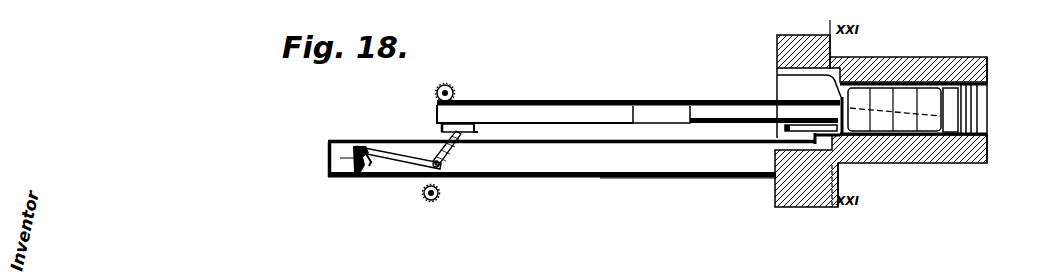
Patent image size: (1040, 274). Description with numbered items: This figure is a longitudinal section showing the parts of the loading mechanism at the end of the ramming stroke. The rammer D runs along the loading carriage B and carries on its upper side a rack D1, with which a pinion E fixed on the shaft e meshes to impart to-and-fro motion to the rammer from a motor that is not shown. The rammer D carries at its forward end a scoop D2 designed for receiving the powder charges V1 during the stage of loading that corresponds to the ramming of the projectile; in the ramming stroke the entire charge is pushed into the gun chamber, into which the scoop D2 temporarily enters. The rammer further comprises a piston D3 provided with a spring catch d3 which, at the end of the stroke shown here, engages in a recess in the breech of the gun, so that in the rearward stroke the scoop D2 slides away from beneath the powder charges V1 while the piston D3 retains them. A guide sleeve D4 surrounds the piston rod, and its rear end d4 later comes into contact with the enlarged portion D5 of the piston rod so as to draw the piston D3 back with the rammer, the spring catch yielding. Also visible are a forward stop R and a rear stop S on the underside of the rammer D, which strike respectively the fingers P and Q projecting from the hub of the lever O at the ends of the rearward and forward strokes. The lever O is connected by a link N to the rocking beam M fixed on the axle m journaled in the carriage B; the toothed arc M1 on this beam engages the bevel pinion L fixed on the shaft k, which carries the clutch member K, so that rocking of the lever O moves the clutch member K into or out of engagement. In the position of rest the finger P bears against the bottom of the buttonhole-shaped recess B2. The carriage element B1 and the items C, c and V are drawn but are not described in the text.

The rammer D is at (543, 112).
The rack D1 is at (500, 103).
The enlarged portion of the piston rod D5 is at (651, 114).
The rear end of the guide sleeve d4 is at (700, 108).
The forward stop R is at (782, 114).
The buttonhole-shaped recess B2 is at (433, 143).
The loading carriage B is at (544, 162).
The frame rack B1 is at (651, 176).
The link N is at (392, 156).
The rocking beam M is at (355, 162).
The axle m is at (356, 160).
The bevel pinion L is at (358, 164).
The shaft k is at (358, 175).
The clutch member K is at (361, 180).
The toothed arc M1 is at (372, 160).
The finger Q is at (458, 142).
The finger P is at (444, 138).
The rear stop S is at (483, 135).
The pinion E is at (447, 85).
The shaft e is at (454, 93).
The roller C is at (437, 201).
The roller pin c is at (426, 198).
The lever O is at (441, 170).
The guide sleeve D4 is at (818, 128).
The piston D3 is at (856, 130).
The spring catch d3 is at (840, 68).
The powder charges V1 is at (902, 93).
The valve seat V is at (956, 84).
The scoop D2 is at (931, 134).